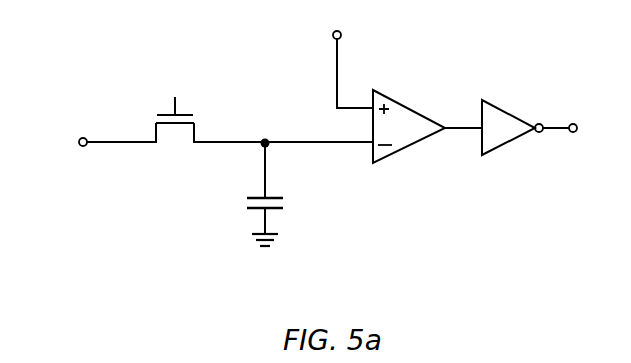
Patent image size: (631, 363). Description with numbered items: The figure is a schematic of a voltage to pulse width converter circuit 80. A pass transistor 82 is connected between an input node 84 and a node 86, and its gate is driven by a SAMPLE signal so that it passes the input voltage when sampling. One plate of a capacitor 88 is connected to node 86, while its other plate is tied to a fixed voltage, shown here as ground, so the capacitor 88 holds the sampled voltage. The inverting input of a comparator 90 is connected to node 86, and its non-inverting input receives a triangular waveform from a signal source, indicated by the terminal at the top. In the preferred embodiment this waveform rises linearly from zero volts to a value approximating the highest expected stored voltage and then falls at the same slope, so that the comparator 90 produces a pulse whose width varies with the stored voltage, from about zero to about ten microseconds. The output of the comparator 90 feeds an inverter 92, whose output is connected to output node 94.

The voltage to pulse width converter circuit 80 is at (471, 197).
The pass transistor 82 is at (175, 147).
The input node 84 is at (78, 143).
The node 86 is at (266, 139).
The capacitor 88 is at (287, 203).
The comparator 90 is at (417, 112).
The inverter 92 is at (510, 110).
The output node 94 is at (576, 122).